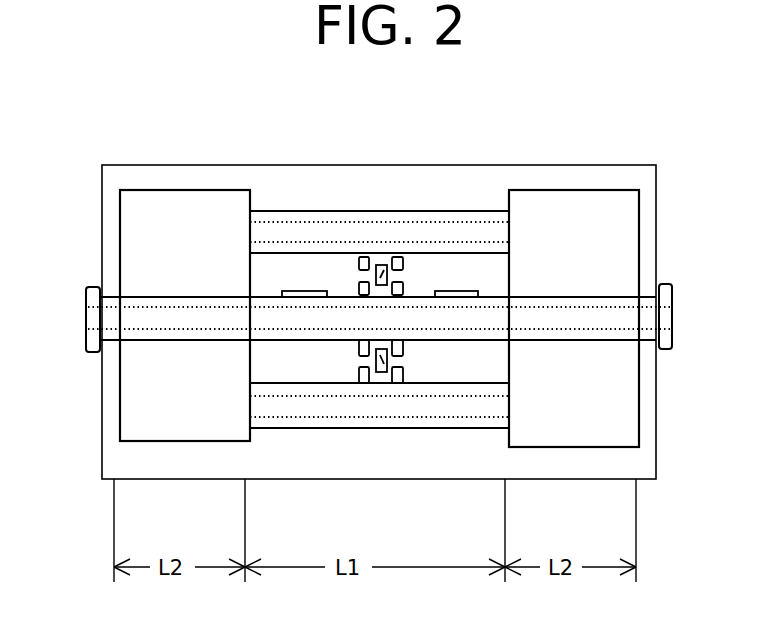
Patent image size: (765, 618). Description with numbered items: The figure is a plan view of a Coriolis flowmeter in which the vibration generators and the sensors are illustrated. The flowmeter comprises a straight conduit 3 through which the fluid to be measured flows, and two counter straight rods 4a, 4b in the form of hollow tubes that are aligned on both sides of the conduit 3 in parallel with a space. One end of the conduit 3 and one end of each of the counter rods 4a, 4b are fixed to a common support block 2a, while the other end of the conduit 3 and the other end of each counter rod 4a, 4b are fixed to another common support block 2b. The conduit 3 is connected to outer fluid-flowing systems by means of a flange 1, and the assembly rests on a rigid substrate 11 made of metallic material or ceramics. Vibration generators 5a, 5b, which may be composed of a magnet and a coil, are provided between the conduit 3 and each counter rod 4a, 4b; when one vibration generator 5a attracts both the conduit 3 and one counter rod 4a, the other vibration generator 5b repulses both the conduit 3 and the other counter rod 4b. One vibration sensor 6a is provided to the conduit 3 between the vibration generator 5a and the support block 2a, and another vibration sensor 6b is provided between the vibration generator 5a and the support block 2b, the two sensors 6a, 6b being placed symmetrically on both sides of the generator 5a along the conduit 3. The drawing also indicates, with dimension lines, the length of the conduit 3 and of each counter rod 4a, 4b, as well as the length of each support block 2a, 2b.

The flange 1 is at (92, 295).
The rigid substrate 11 is at (135, 181).
The support block 2a is at (187, 207).
The support block 2b is at (577, 208).
The straight conduit 3 is at (300, 318).
The counter straight rod 4a is at (378, 233).
The counter straight rod 4b is at (374, 406).
The vibration generator 5a is at (395, 252).
The vibration generator 5b is at (380, 360).
The vibration sensor 6a is at (295, 292).
The vibration sensor 6b is at (450, 292).